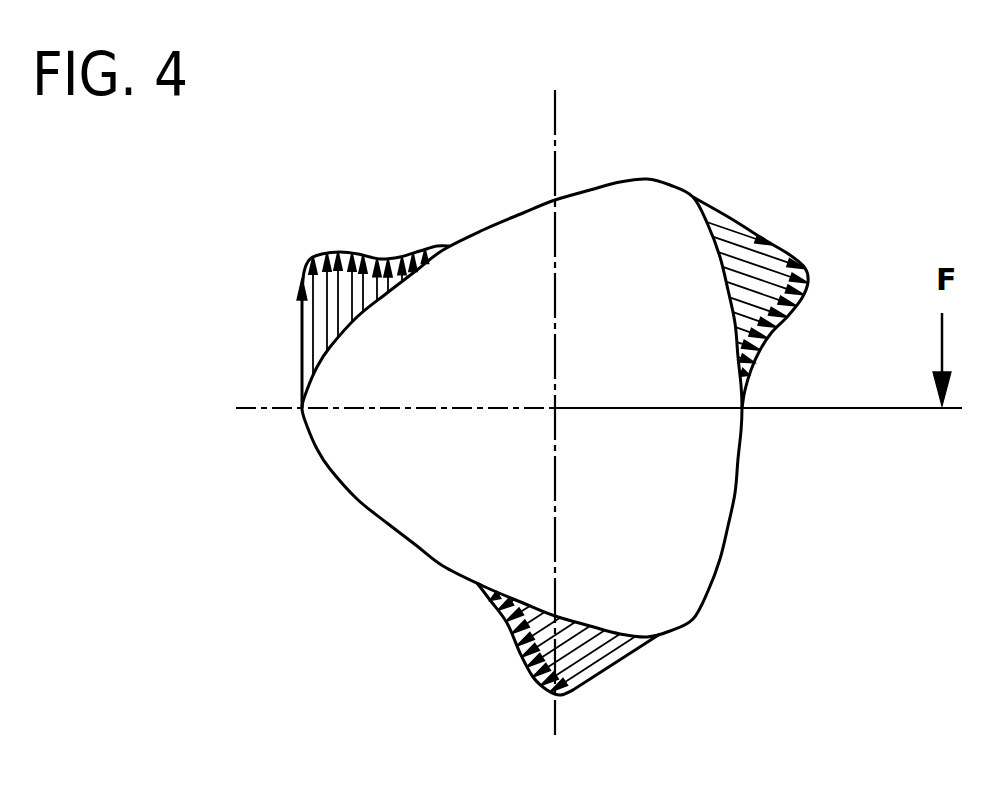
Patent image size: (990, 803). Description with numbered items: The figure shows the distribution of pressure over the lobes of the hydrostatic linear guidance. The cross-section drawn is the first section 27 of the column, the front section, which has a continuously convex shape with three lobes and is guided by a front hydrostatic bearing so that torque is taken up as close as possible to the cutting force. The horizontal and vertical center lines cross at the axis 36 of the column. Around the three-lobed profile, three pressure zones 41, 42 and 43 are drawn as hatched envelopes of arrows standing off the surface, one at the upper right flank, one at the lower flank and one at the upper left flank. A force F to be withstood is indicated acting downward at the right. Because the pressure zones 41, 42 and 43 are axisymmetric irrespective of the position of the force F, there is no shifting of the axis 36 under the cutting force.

The first section 27 is at (592, 191).
The axis 36 is at (555, 409).
The pressure zone 41 is at (748, 256).
The pressure zone 42 is at (612, 656).
The pressure zone 43 is at (312, 332).